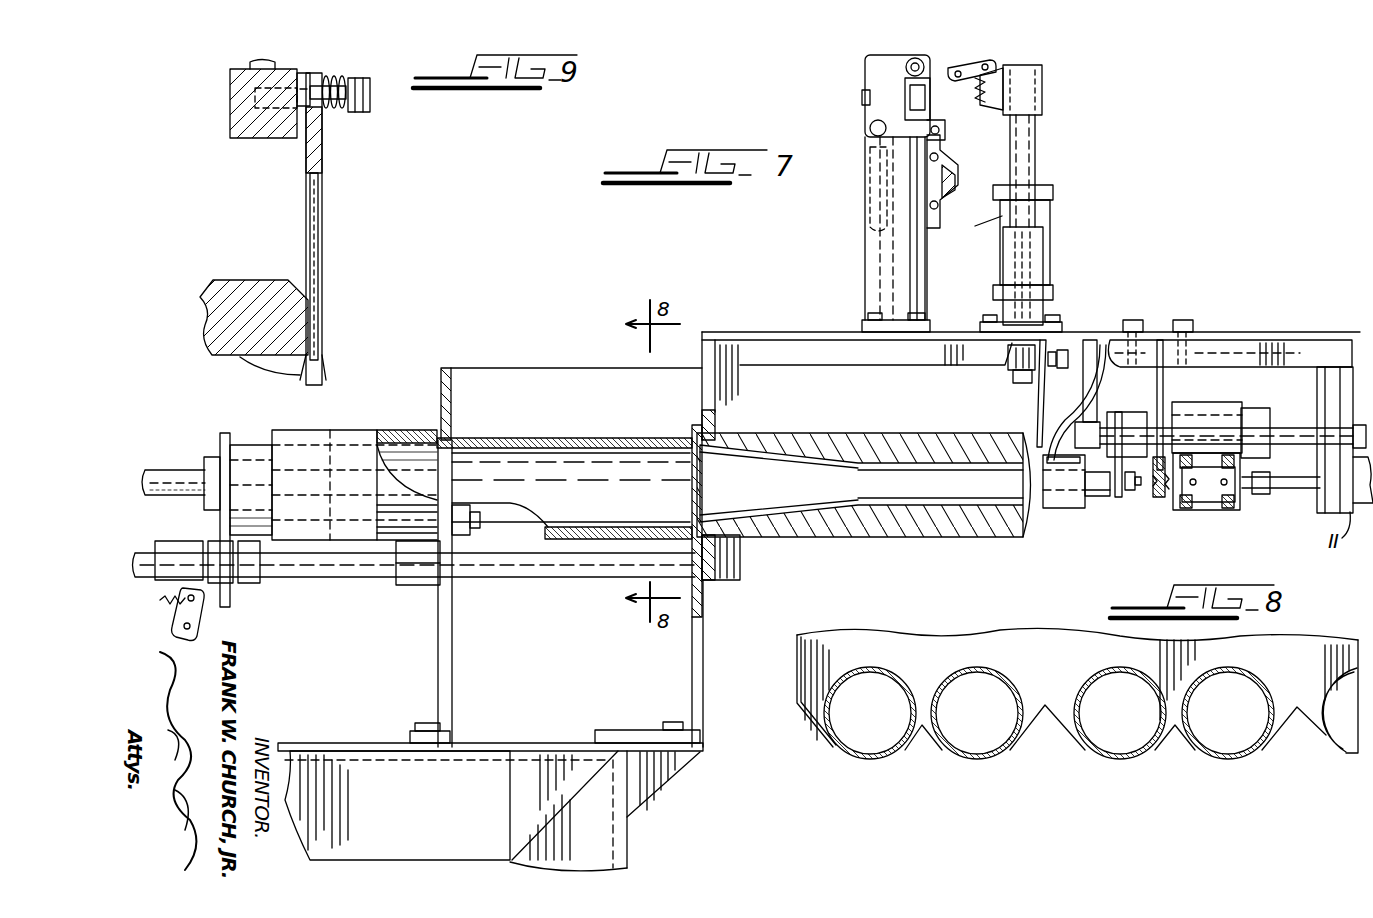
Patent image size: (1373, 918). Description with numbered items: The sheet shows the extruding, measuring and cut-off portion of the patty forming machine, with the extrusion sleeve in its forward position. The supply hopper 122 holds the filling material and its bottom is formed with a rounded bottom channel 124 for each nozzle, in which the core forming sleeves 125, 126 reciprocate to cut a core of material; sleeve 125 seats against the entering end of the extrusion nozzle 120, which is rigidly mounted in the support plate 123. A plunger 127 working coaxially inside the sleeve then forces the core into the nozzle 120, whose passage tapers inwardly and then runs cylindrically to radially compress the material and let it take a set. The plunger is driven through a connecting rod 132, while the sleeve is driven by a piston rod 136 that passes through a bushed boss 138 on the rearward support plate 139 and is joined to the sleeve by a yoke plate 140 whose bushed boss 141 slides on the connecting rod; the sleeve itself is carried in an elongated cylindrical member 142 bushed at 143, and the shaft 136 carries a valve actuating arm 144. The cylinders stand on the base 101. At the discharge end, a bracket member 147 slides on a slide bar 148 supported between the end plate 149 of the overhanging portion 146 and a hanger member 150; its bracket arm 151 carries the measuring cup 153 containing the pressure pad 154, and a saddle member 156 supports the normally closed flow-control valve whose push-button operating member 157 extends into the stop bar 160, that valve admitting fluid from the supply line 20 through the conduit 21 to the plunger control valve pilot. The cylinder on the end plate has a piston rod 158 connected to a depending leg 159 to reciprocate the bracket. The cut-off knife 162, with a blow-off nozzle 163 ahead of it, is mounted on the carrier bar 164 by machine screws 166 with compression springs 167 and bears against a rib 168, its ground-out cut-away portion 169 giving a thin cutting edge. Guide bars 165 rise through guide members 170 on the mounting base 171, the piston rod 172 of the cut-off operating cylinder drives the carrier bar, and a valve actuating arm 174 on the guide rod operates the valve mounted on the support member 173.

In FIG. 7, the base 101 is at (627, 842).
In FIG. 9, the extrusion nozzle 120 is at (238, 280).
In FIG. 7, the extrusion nozzle 120 is at (895, 528).
In FIG. 7, the supply hopper 122 is at (556, 396).
In FIG. 8, the supply hopper 122 is at (1078, 666).
In FIG. 7, the support plate 123 is at (742, 560).
In FIG. 8, the rounded bottom channel 124 is at (868, 760).
In FIG. 7, the core forming sleeve 125 is at (590, 438).
In FIG. 8, the core forming sleeve 125 is at (893, 684).
In FIG. 8, the core forming sleeve 126 is at (981, 672).
In FIG. 7, the plunger 127 is at (440, 465).
In FIG. 7, the connecting rod 132 is at (165, 468).
In FIG. 7, the piston rod 136 is at (313, 569).
In FIG. 7, the boss 138 is at (413, 587).
In FIG. 7, the rearward support plate 139 is at (455, 656).
In FIG. 7, the yoke plate 140 is at (232, 598).
In FIG. 7, the boss 141 is at (223, 434).
In FIG. 7, the elongated cylindrical member 142 is at (348, 428).
In FIG. 7, the bushing 143 is at (418, 428).
In FIG. 7, the valve actuating arm 144 is at (207, 628).
In FIG. 7, the overhanging portion 146 is at (1246, 332).
In FIG. 7, the bracket member 147 is at (1250, 413).
In FIG. 7, the slide bar 148 is at (1279, 434).
In FIG. 7, the end plate 149 is at (1355, 340).
In FIG. 7, the hanger member 150 is at (1092, 415).
In FIG. 7, the bracket arm 151 is at (1132, 490).
In FIG. 7, the measuring cup 153 is at (1096, 497).
In FIG. 7, the pressure pad 154 is at (1055, 511).
In FIG. 7, the saddle member 156 is at (1207, 402).
In FIG. 7, the operating member 157 is at (1158, 502).
In FIG. 7, the piston rod 158 is at (1305, 490).
In FIG. 7, the depending leg 159 is at (1260, 496).
In FIG. 7, the stop bar 160 is at (1161, 400).
In FIG. 9, the cut-off knife 162 is at (306, 200).
In FIG. 7, the cut-off knife 162 is at (1037, 400).
In FIG. 7, the blow-off nozzle 163 is at (1118, 412).
In FIG. 9, the carrier bar 164 is at (228, 126).
In FIG. 7, the carrier bar 164 is at (1008, 355).
In FIG. 9, the guide bar 165 is at (248, 63).
In FIG. 7, the guide bar 165 is at (1037, 167).
In FIG. 9, the machine screw 166 is at (371, 108).
In FIG. 9, the compression spring 167 is at (336, 110).
In FIG. 9, the rib 168 is at (310, 73).
In FIG. 9, the cut-away portion 169 is at (318, 237).
In FIG. 7, the guide member 170 is at (1043, 272).
In FIG. 7, the mounting base 171 is at (1065, 328).
In FIG. 7, the piston rod 172 is at (1013, 384).
In FIG. 7, the support member 173 is at (914, 258).
In FIG. 7, the valve actuating arm 174 is at (975, 60).
In FIG. 7, the supply line 20 is at (1192, 486).
In FIG. 7, the conduit 21 is at (1225, 486).